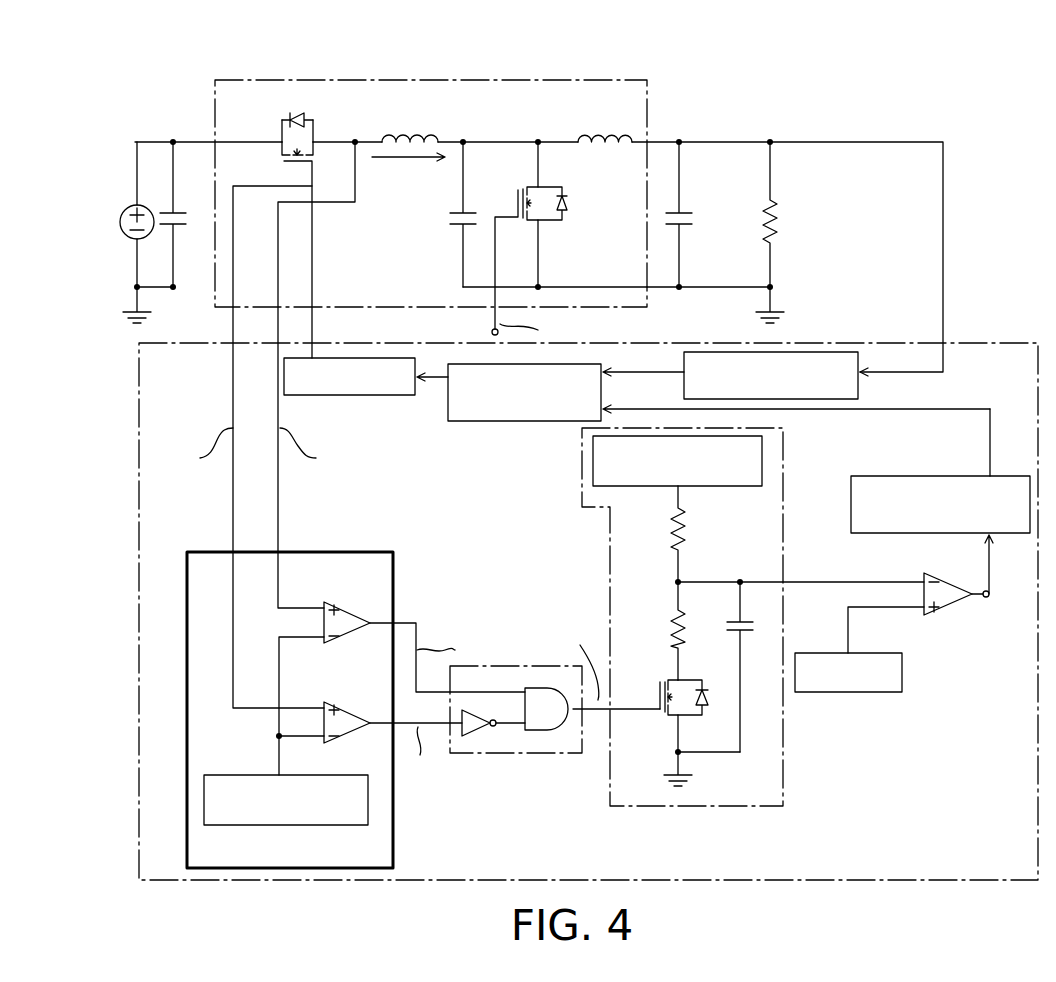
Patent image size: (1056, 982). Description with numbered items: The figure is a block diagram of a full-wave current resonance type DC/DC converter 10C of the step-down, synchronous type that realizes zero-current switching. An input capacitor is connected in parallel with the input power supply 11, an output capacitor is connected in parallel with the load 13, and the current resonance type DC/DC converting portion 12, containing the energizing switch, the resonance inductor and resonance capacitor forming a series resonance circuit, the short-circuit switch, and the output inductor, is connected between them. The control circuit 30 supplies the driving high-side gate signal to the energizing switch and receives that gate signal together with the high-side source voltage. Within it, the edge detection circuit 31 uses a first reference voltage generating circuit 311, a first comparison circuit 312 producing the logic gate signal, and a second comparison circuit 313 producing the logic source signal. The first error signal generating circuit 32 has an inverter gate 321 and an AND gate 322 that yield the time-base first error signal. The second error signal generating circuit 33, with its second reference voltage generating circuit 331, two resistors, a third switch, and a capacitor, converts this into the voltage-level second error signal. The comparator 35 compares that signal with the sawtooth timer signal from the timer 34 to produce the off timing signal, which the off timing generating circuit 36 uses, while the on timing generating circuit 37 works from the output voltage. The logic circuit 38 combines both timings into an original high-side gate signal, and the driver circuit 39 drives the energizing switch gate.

The current resonance type DC/DC converter 10C is at (856, 112).
The input power supply 11 is at (119, 222).
The current resonance type DC/DC converting portion 12 is at (438, 80).
The load 13 is at (779, 221).
The control circuit 30 is at (137, 580).
The edge detection circuit 31 is at (393, 838).
The first reference voltage generating circuit 311 is at (296, 774).
The first comparison circuit 312 is at (348, 701).
The second comparison circuit 313 is at (348, 601).
The first error signal generating circuit 32 is at (550, 755).
The inverter gate 321 is at (475, 727).
The AND gate 322 is at (537, 688).
The second error signal generating circuit 33 is at (695, 806).
The second reference voltage generating circuit 331 is at (710, 486).
The timer 34 is at (845, 692).
The comparator 35 is at (945, 612).
The off timing generating circuit 36 is at (940, 476).
The on timing generating circuit 37 is at (858, 383).
The logic circuit 38 is at (522, 421).
The driver circuit 39 is at (370, 395).